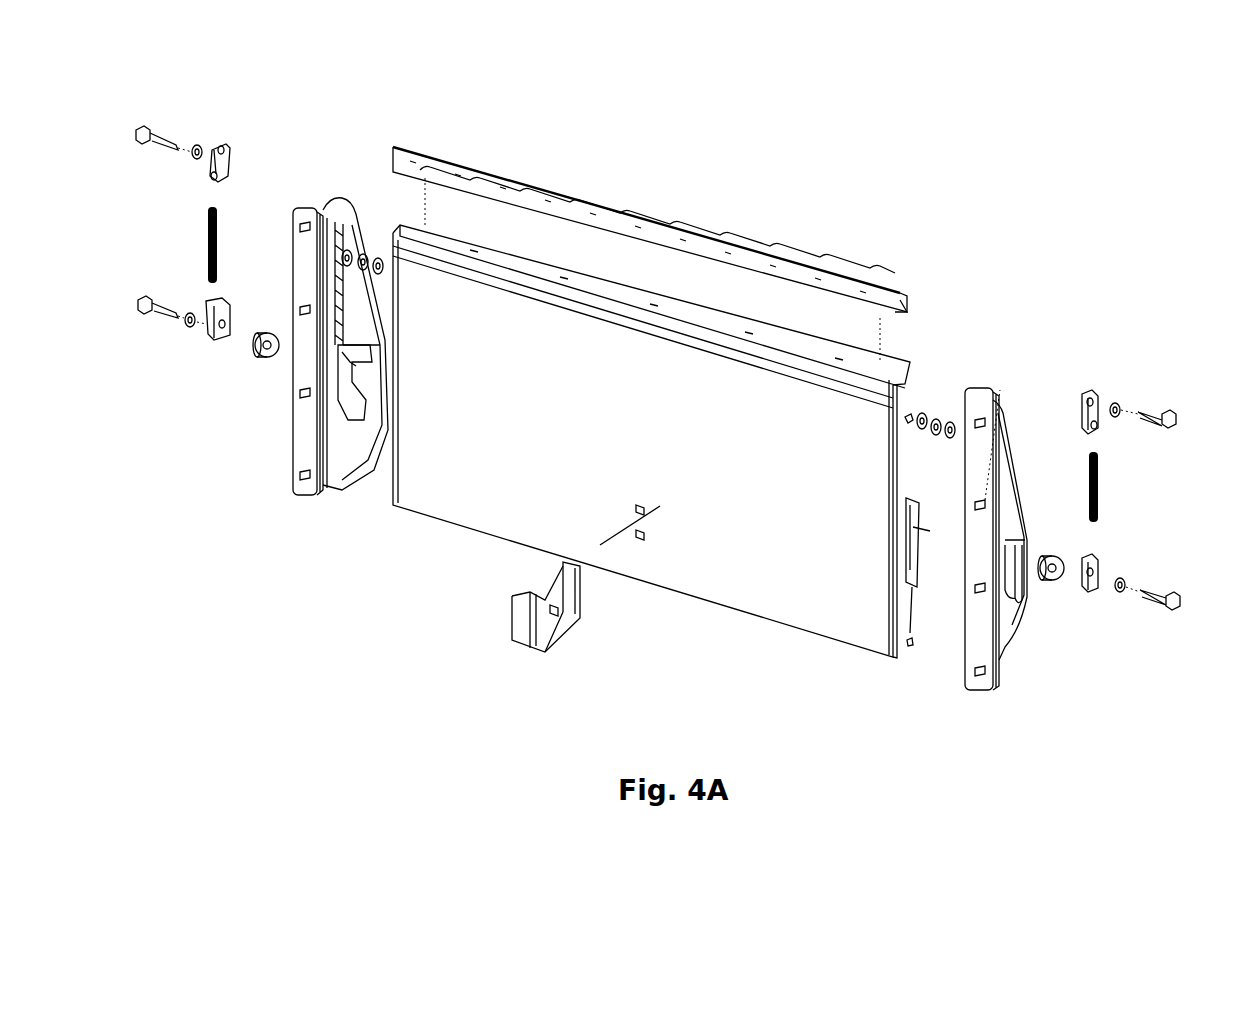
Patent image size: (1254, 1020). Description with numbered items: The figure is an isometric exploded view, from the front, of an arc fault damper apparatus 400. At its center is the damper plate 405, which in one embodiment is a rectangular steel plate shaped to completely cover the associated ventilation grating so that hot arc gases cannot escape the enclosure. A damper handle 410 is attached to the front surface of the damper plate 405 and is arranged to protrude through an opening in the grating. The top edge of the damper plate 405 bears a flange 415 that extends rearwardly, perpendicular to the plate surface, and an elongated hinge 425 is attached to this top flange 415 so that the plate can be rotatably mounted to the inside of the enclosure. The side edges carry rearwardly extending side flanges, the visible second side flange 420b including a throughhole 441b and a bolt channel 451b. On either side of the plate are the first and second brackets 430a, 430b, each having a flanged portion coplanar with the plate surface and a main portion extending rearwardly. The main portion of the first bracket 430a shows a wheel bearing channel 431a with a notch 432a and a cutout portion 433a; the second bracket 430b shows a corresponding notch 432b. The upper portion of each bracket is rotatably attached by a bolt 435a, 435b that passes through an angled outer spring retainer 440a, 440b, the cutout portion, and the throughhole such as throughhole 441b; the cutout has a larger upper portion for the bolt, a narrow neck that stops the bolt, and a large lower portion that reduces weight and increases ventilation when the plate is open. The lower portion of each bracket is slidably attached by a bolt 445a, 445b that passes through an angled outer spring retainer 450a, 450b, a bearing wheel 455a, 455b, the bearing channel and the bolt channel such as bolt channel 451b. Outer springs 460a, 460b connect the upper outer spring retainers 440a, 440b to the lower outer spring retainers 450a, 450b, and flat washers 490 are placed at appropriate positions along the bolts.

The arc fault damper apparatus 400 is at (950, 208).
The damper plate 405 is at (696, 417).
The damper handle 410 is at (520, 638).
The flange 415 is at (686, 315).
The second side flange 420b is at (900, 467).
The elongated hinge 425 is at (612, 218).
The first bracket 430a is at (291, 495).
The second bracket 430b is at (962, 695).
The wheel bearing channel 431a is at (346, 366).
The notch 432a is at (362, 355).
The notch 432b is at (1020, 537).
The cutout portion 433a is at (340, 240).
The bolt 435a is at (146, 126).
The bolt 435b is at (1168, 412).
The angled outer spring retainer 440a is at (220, 146).
The angled outer spring retainer 440b is at (1086, 390).
The throughhole 441b is at (908, 415).
The bolt 445a is at (145, 312).
The bolt 445b is at (1174, 596).
The angled outer spring retainer 450a is at (216, 338).
The angled outer spring retainer 450b is at (1090, 588).
The bolt channel 451b is at (904, 550).
The bearing wheel 455a is at (259, 356).
The bearing wheel 455b is at (1050, 582).
The outer spring 460a is at (205, 236).
The outer spring 460b is at (1100, 487).
The flat washer 490 is at (196, 145).